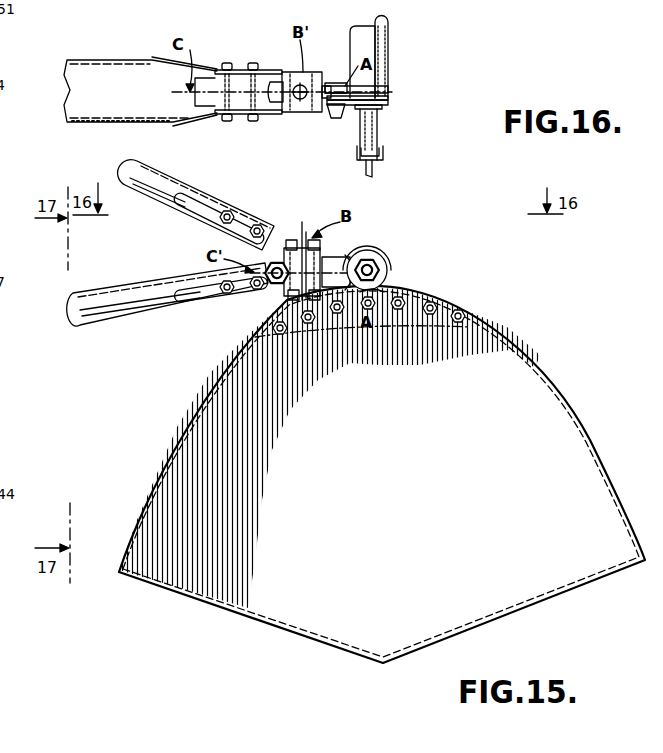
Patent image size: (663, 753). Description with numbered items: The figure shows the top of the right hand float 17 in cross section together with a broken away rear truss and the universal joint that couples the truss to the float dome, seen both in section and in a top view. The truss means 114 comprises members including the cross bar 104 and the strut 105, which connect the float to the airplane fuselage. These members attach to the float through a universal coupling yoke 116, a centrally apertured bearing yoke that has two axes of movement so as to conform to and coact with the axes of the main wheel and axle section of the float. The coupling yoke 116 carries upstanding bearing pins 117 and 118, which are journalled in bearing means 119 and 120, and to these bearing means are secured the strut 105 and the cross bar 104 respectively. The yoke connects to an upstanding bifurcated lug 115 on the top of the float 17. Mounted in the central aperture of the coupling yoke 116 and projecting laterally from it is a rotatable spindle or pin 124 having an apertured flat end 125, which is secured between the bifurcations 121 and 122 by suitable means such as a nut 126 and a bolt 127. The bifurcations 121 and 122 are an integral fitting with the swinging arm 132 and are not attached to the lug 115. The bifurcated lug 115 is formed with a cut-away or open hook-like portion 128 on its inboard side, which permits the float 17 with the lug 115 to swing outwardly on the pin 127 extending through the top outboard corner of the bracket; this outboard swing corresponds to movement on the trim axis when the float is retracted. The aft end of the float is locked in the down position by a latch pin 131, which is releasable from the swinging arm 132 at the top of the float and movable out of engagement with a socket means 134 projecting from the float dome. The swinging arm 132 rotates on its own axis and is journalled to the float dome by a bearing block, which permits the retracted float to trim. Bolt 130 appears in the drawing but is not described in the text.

In FIG. 15, the float 17 is at (508, 328).
In FIG. 15, the cross bar 104 is at (130, 312).
In FIG. 16, the strut 105 is at (118, 73).
In FIG. 15, the strut 105 is at (157, 178).
In FIG. 15, the truss means 114 is at (184, 237).
In FIG. 16, the bifurcated lug 115 is at (385, 105).
In FIG. 15, the bifurcated lug 115 is at (384, 292).
In FIG. 16, the universal coupling yoke 116 is at (277, 113).
In FIG. 15, the universal coupling yoke 116 is at (282, 262).
In FIG. 15, the bearing pin 117 is at (292, 325).
In FIG. 15, the bearing pin 118 is at (318, 236).
In FIG. 15, the bearing means 119 is at (292, 244).
In FIG. 15, the bearing means 120 is at (285, 300).
In FIG. 16, the bifurcation 121 is at (390, 101).
In FIG. 16, the bifurcation 122 is at (390, 97).
In FIG. 16, the rotatable spindle 124 is at (273, 70).
In FIG. 15, the rotatable spindle 124 is at (322, 256).
In FIG. 16, the apertured flat end 125 is at (340, 88).
In FIG. 16, the nut 126 is at (327, 115).
In FIG. 16, the bolt 127 is at (337, 142).
In FIG. 15, the bolt 127 is at (348, 258).
In FIG. 15, the open hook-like portion 128 is at (316, 327).
In FIG. 15, the bolt 130 is at (388, 267).
In FIG. 16, the latch pin 131 is at (372, 135).
In FIG. 16, the swinging arm 132 is at (372, 38).
In FIG. 16, the socket means 134 is at (380, 148).